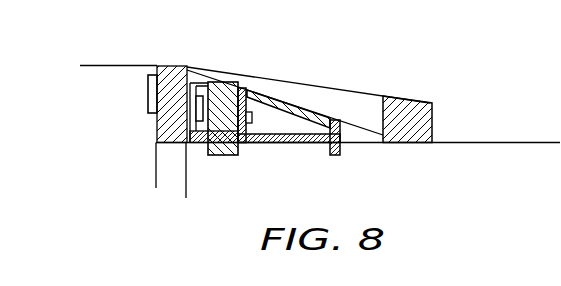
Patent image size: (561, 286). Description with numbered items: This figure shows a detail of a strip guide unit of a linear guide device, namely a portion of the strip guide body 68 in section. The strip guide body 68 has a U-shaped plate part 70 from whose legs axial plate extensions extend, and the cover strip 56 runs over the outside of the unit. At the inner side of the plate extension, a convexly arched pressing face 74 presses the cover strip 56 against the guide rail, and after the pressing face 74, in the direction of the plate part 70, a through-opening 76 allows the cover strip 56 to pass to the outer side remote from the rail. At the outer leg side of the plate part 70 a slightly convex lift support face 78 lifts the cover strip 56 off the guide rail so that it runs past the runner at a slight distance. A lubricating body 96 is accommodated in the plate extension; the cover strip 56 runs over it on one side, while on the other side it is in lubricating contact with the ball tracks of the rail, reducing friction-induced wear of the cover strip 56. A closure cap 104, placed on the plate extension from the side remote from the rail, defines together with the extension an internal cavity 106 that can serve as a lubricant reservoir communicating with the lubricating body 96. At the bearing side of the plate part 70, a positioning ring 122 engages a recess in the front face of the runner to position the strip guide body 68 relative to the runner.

The cover strip 56 is at (88, 66).
The strip guide body 68 is at (186, 198).
The plate part 70 is at (156, 127).
The pressing face 74 is at (405, 143).
The through-opening 76 is at (358, 117).
The lift support face 78 is at (167, 66).
The lubricating body 96 is at (220, 152).
The closure cap 104 is at (295, 107).
The internal cavity 106 is at (280, 127).
The positioning ring 122 is at (148, 97).